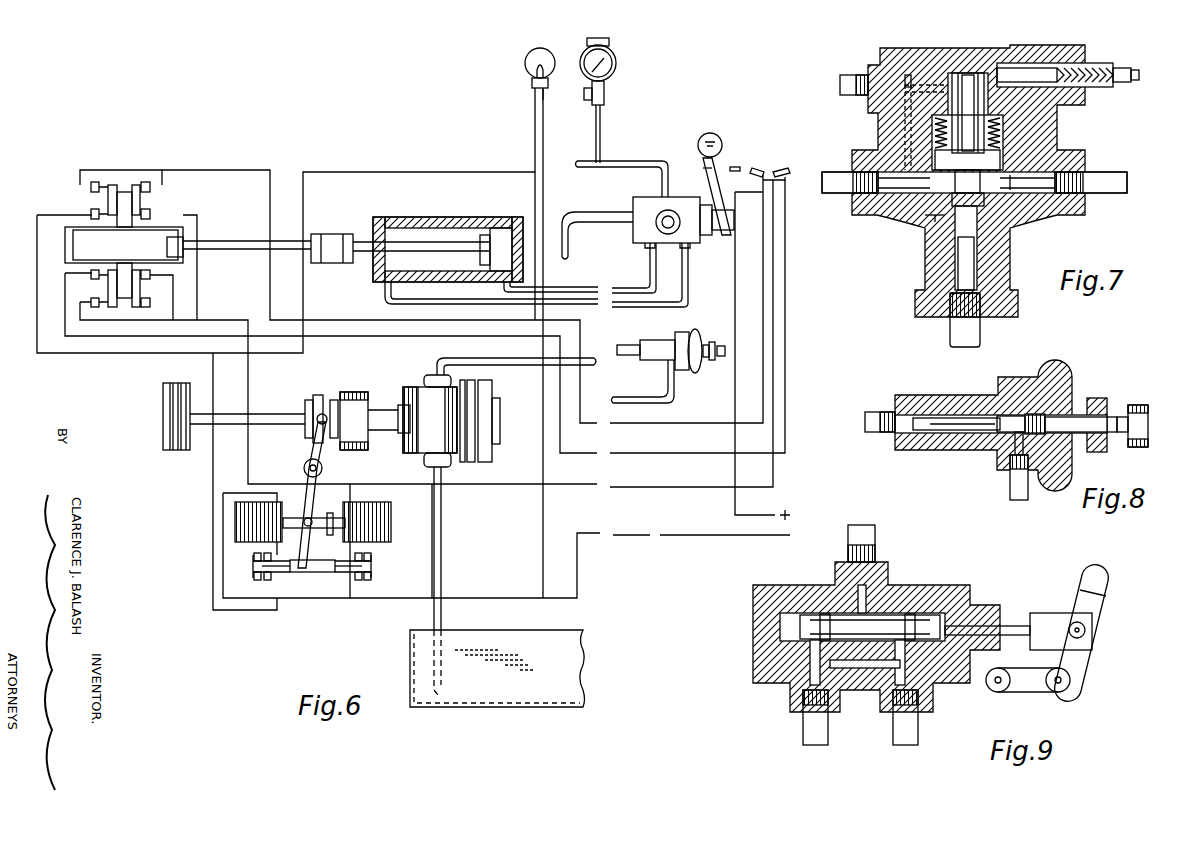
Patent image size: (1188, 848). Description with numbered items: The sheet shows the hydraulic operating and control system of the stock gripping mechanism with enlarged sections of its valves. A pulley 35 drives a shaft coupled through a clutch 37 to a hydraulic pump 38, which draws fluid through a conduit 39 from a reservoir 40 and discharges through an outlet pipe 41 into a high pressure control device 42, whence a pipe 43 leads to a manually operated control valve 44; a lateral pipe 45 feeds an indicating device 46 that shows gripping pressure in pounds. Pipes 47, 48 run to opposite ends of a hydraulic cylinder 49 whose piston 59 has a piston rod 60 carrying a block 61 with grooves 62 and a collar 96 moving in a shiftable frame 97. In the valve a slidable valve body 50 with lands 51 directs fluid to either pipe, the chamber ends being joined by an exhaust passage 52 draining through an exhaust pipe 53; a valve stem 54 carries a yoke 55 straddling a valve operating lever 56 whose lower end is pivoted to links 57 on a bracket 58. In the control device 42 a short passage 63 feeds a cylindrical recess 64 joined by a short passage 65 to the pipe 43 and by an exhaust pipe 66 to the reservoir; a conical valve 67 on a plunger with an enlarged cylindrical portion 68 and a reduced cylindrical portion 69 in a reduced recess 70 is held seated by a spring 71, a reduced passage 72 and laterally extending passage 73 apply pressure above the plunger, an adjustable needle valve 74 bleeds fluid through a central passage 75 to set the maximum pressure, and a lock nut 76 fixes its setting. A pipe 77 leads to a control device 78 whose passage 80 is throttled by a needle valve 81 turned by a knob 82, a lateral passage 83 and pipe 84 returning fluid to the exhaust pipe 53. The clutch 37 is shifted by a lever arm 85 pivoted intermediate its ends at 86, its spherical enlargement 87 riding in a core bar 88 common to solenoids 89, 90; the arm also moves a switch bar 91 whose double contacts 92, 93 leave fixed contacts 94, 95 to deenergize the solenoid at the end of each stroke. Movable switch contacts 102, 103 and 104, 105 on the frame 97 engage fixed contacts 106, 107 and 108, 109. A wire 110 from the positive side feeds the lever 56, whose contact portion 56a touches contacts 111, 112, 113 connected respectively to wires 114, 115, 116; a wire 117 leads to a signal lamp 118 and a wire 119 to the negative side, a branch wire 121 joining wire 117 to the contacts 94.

In FIG. 6, the pulley 35 is at (170, 452).
In FIG. 6, the clutch 37 is at (352, 392).
In FIG. 6, the hydraulic pump 38 is at (451, 421).
In FIG. 6, the conduit 39 is at (441, 545).
In FIG. 6, the fluid reservoir 40 is at (490, 705).
In FIG. 6, the outlet pipe 41 is at (522, 358).
In FIG. 7, the outlet pipe 41 is at (845, 192).
In FIG. 7, the control device 42 is at (1010, 255).
In FIG. 6, the pipe 43 is at (645, 163).
In FIG. 7, the pipe 43 is at (1110, 195).
In FIG. 9, the pipe 43 is at (865, 552).
In FIG. 6, the manually operated control valve 44 is at (655, 197).
In FIG. 9, the manually operated control valve 44 is at (950, 585).
In FIG. 6, the lateral pipe 45 is at (600, 140).
In FIG. 6, the indicating device 46 is at (617, 68).
In FIG. 6, the pipe 47 is at (648, 275).
In FIG. 9, the pipe 47 is at (803, 730).
In FIG. 6, the pipe 48 is at (686, 270).
In FIG. 9, the pipe 48 is at (918, 730).
In FIG. 6, the hydraulic cylinder 49 is at (450, 217).
In FIG. 9, the valve body 50 is at (880, 620).
In FIG. 9, the lands 51 is at (826, 614).
In FIG. 9, the exhaust passage 52 is at (865, 668).
In FIG. 6, the exhaust pipe 53 is at (580, 205).
In FIG. 9, the valve stem 54 is at (1010, 626).
In FIG. 9, the yoke 55 is at (1050, 613).
In FIG. 6, the valve operating lever 56 is at (716, 133).
In FIG. 9, the valve operating lever 56 is at (1108, 590).
In FIG. 6, the contact portion 56a is at (700, 168).
In FIG. 9, the links 57 is at (1045, 690).
In FIG. 9, the bracket 58 is at (990, 690).
In FIG. 6, the piston 59 is at (505, 228).
In FIG. 6, the piston rod 60 is at (405, 240).
In FIG. 6, the block 61 is at (350, 233).
In FIG. 6, the grooves 62 is at (328, 235).
In FIG. 7, the short passage 63 is at (925, 215).
In FIG. 7, the cylindrical recess 64 is at (937, 218).
In FIG. 7, the short passage 65 is at (1085, 175).
In FIG. 7, the exhaust pipe 66 is at (955, 335).
In FIG. 7, the conical valve 67 is at (985, 210).
In FIG. 7, the enlarged cylindrical portion 68 is at (1005, 158).
In FIG. 7, the reduced cylindrical portion 69 is at (960, 73).
In FIG. 7, the reduced recess 70 is at (972, 73).
In FIG. 7, the spring 71 is at (1005, 135).
In FIG. 7, the reduced passage 72 is at (880, 128).
In FIG. 7, the laterally extending passage 73 is at (915, 85).
In FIG. 7, the needle valve 74 is at (1050, 50).
In FIG. 7, the central passage 75 is at (977, 181).
In FIG. 7, the lock nut 76 is at (1118, 64).
In FIG. 6, the pipe 77 is at (622, 343).
In FIG. 7, the pipe 77 is at (852, 72).
In FIG. 8, the pipe 77 is at (878, 410).
In FIG. 6, the control device 78 is at (690, 330).
In FIG. 8, the control device 78 is at (1065, 362).
In FIG. 8, the passage 80 is at (940, 416).
In FIG. 8, the needle valve 81 is at (1005, 432).
In FIG. 6, the knob 82 is at (720, 343).
In FIG. 8, the knob 82 is at (1135, 405).
In FIG. 8, the lateral passage 83 is at (1018, 440).
In FIG. 6, the pipe 84 is at (652, 398).
In FIG. 8, the pipe 84 is at (1015, 495).
In FIG. 6, the lever arm 85 is at (308, 448).
In FIG. 6, the pivot 86 is at (322, 468).
In FIG. 6, the spherical enlargement 87 is at (310, 518).
In FIG. 6, the core bar 88 is at (330, 535).
In FIG. 6, the solenoid 89 is at (235, 520).
In FIG. 6, the solenoid 90 is at (391, 518).
In FIG. 6, the switch bar 91 is at (312, 572).
In FIG. 6, the double contacts 92 is at (253, 567).
In FIG. 6, the double contacts 93 is at (371, 567).
In FIG. 6, the fixed contacts 94 is at (272, 568).
In FIG. 6, the fixed contacts 95 is at (342, 568).
In FIG. 6, the collar 96 is at (183, 258).
In FIG. 6, the shiftable frame 97 is at (183, 238).
In FIG. 6, the switch contacts 102 is at (112, 185).
In FIG. 6, the switch contacts 103 is at (136, 185).
In FIG. 6, the switch contacts 104 is at (112, 307).
In FIG. 6, the switch contacts 105 is at (136, 307).
In FIG. 6, the fixed contacts 106 is at (91, 197).
In FIG. 6, the fixed contacts 107 is at (150, 197).
In FIG. 6, the fixed contacts 108 is at (91, 292).
In FIG. 6, the fixed contacts 109 is at (150, 292).
In FIG. 6, the wire 110 is at (735, 505).
In FIG. 6, the contact 111 is at (737, 165).
In FIG. 6, the contact 112 is at (757, 167).
In FIG. 6, the contact 113 is at (795, 155).
In FIG. 6, the wire 114 is at (210, 170).
In FIG. 6, the wire 115 is at (252, 380).
In FIG. 6, the wire 116 is at (322, 336).
In FIG. 6, the wire 117 is at (62, 355).
In FIG. 6, the signal lamp 118 is at (525, 68).
In FIG. 6, the wire 119 is at (548, 140).
In FIG. 6, the branch wire 121 is at (213, 455).